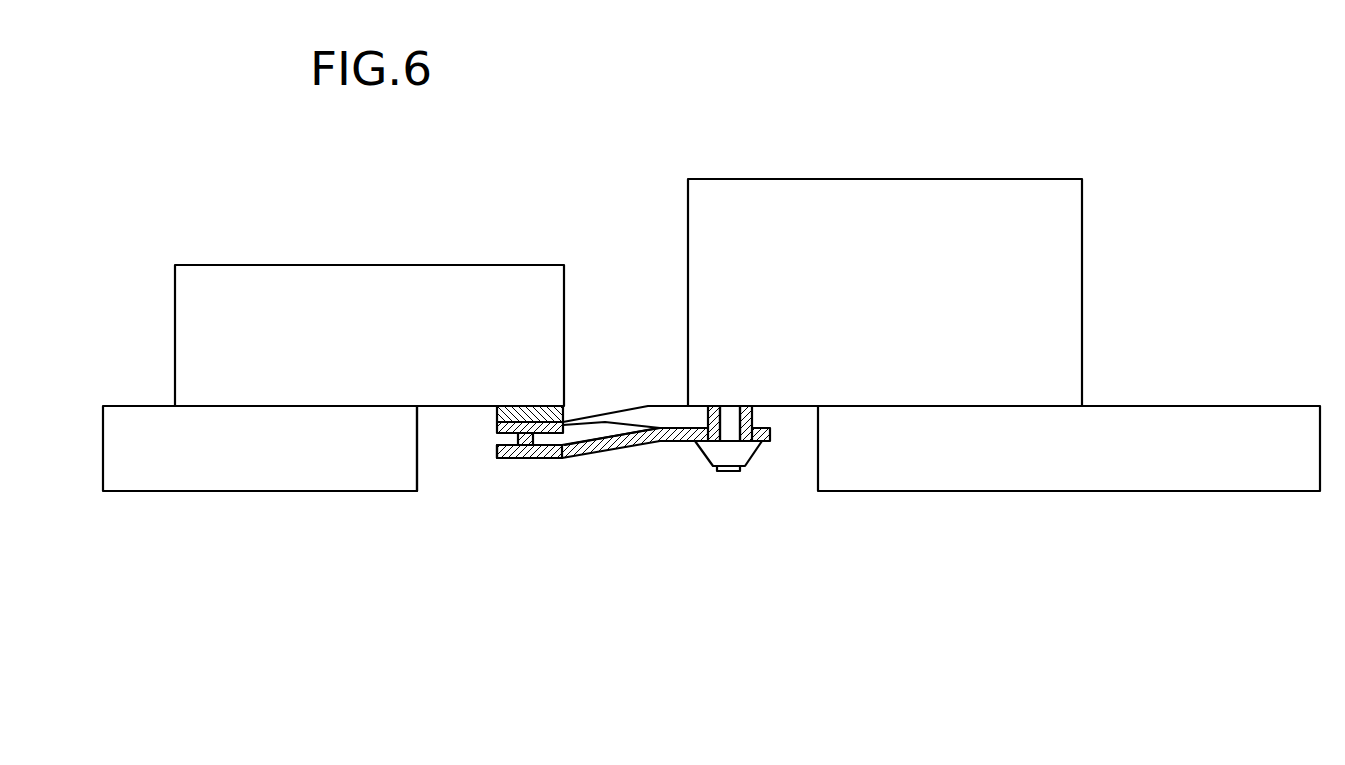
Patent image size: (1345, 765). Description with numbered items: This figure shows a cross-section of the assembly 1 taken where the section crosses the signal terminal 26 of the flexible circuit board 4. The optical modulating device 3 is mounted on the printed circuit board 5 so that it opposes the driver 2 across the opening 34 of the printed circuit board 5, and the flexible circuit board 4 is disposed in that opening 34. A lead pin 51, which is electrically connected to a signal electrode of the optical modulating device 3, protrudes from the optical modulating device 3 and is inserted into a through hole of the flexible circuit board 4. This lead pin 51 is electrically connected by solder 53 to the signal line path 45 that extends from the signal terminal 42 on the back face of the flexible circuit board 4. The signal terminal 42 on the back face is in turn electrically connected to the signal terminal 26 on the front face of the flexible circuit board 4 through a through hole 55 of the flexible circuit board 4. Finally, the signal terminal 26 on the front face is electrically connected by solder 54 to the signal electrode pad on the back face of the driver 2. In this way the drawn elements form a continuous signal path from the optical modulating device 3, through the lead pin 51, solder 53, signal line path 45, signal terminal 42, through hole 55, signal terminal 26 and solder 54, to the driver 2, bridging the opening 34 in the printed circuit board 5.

The mold apparatus 1 is at (616, 114).
The driver 2 is at (176, 266).
The optical modulating device 3 is at (1050, 179).
The flexible circuit board 4 is at (590, 456).
The printed circuit board 5 is at (103, 406).
The signal terminal 26 is at (570, 414).
The opening 34 is at (417, 493).
The signal terminal 42 is at (508, 460).
The signal line path 45 is at (622, 444).
The lead pin 51 is at (729, 410).
The solder 53 is at (750, 422).
The solder 54 is at (528, 406).
The through hole 55 is at (526, 442).